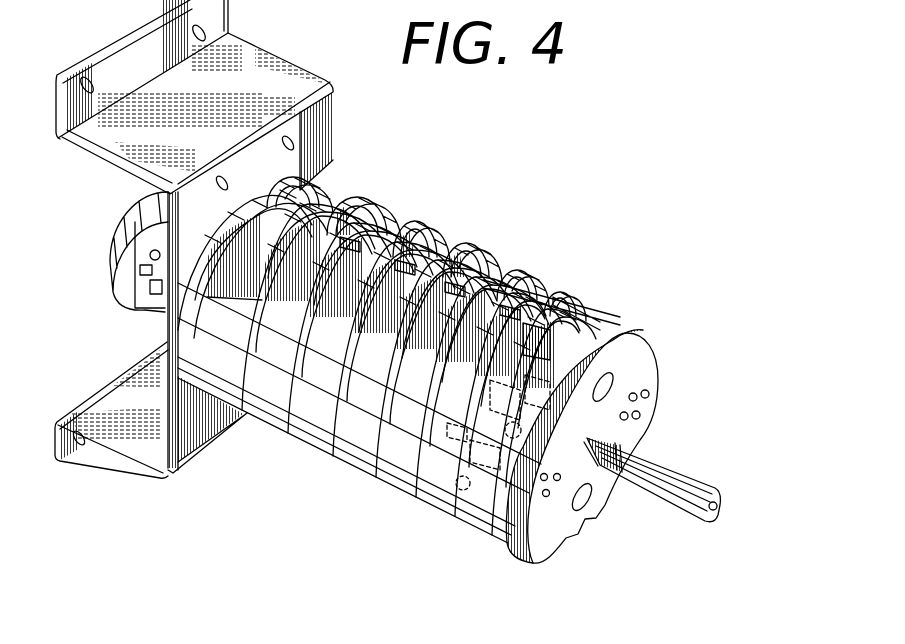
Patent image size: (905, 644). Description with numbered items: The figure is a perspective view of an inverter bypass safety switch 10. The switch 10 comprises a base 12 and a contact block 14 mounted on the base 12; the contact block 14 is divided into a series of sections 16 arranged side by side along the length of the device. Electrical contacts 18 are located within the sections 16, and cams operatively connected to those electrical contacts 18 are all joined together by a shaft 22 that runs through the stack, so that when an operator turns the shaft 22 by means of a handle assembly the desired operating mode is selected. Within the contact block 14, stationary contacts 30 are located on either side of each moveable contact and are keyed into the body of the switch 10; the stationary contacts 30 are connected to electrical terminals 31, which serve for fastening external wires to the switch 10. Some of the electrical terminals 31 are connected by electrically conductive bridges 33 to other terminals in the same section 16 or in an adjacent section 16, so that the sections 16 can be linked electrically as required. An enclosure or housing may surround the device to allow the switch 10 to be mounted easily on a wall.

The inverter bypass safety switch 10 is at (311, 545).
The base 12 is at (264, 75).
The contact block 14 is at (607, 313).
The sections 16 is at (110, 285).
The electrical contacts 18 is at (600, 325).
The shaft 22 is at (622, 434).
The stationary contacts 30 is at (627, 357).
The electrical terminals 31 is at (150, 250).
The electrically conductive bridges 33 is at (353, 195).